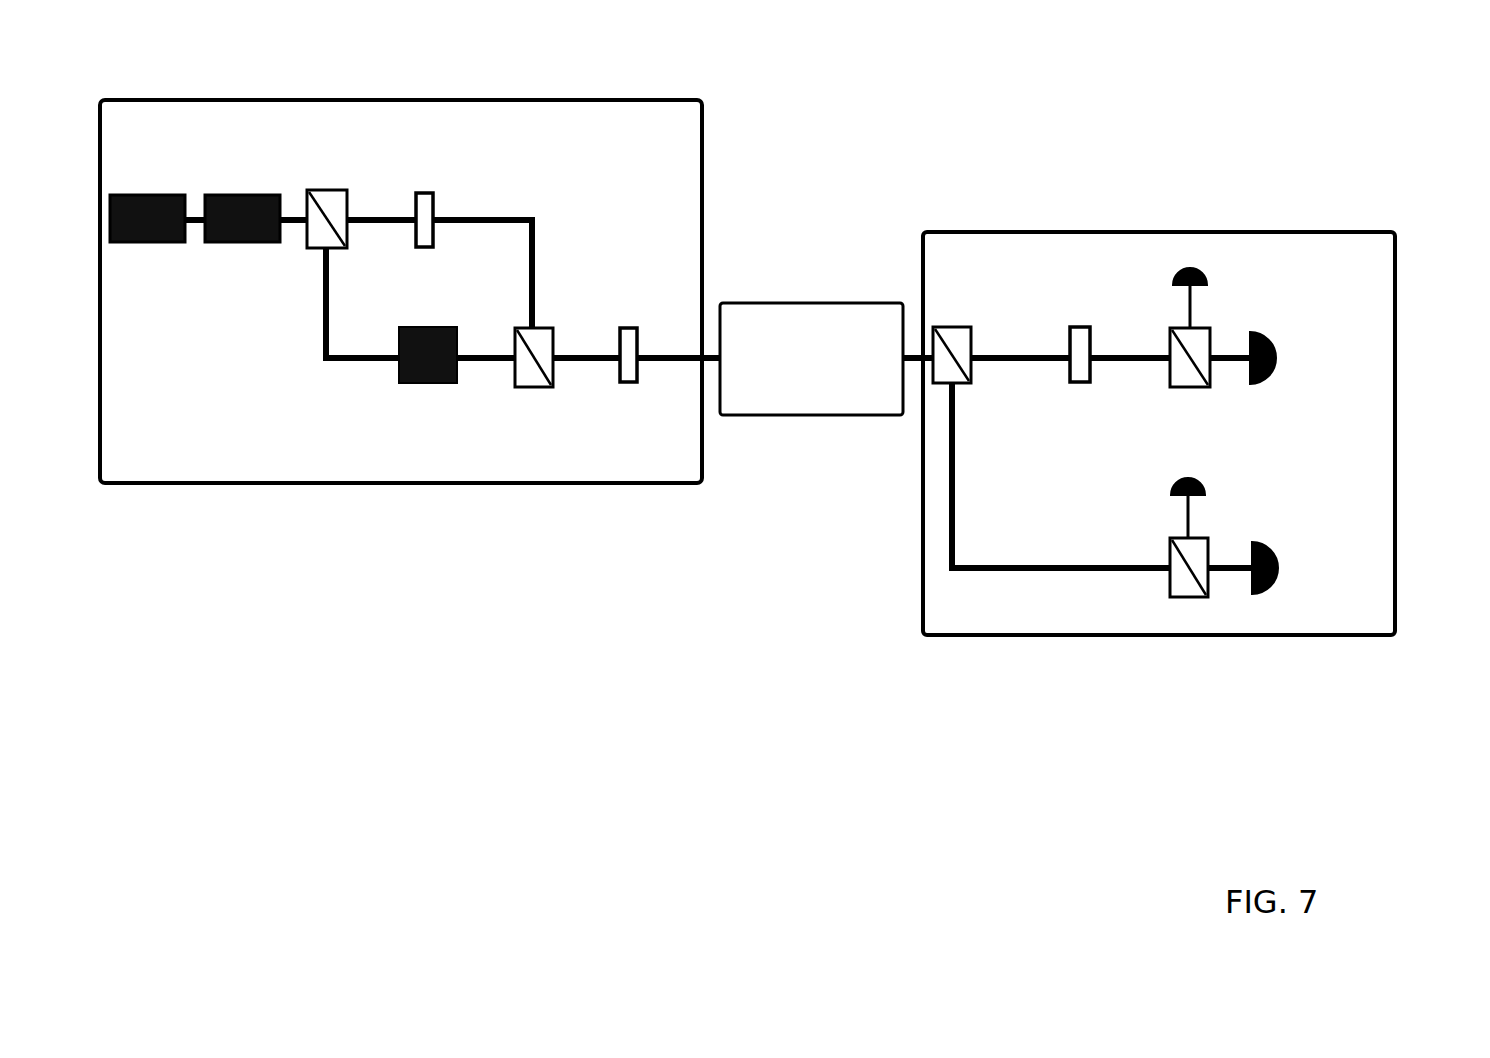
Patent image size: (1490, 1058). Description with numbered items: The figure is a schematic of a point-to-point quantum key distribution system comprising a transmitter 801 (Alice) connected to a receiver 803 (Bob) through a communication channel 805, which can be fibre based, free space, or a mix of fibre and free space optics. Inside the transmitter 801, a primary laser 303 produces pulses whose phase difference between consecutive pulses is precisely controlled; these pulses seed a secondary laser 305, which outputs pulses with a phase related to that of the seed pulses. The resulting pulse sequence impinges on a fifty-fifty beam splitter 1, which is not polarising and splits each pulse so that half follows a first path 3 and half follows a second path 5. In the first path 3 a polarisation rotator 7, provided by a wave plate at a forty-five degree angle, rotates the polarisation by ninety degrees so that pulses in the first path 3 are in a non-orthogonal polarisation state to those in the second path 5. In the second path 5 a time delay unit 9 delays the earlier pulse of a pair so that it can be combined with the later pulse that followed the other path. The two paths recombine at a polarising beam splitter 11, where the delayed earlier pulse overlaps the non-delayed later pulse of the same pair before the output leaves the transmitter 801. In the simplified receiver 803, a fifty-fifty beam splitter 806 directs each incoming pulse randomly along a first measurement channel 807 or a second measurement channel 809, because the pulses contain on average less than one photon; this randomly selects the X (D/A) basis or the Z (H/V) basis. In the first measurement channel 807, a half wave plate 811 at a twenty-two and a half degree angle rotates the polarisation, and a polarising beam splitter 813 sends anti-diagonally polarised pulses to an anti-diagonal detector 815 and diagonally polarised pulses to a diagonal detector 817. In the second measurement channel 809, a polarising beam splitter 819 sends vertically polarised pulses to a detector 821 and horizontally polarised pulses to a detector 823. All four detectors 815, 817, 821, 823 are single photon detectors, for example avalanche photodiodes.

The beam splitter 1 is at (327, 193).
The first path 3 is at (481, 212).
The second path 5 is at (321, 346).
The polarisation rotator 7 is at (428, 192).
The time delay unit 9 is at (404, 392).
The polarising beam splitter 11 is at (520, 392).
The primary laser 303 is at (157, 190).
The secondary laser 305 is at (242, 187).
The transmitter 801 is at (202, 520).
The receiver 803 is at (1161, 657).
The communication channel 805 is at (819, 291).
The 50-50 beam splitter 806 is at (970, 328).
The first measurement channel 807 is at (1143, 342).
The second measurement channel 809 is at (947, 536).
The half wave plate 811 is at (1088, 328).
The polarising beam splitter 813 is at (1213, 329).
The anti-diagonal detector 815 is at (1190, 250).
The diagonal detector 817 is at (1293, 356).
The polarising beam splitter 819 is at (1213, 600).
The detector 821 is at (1245, 473).
The detector 823 is at (1322, 564).